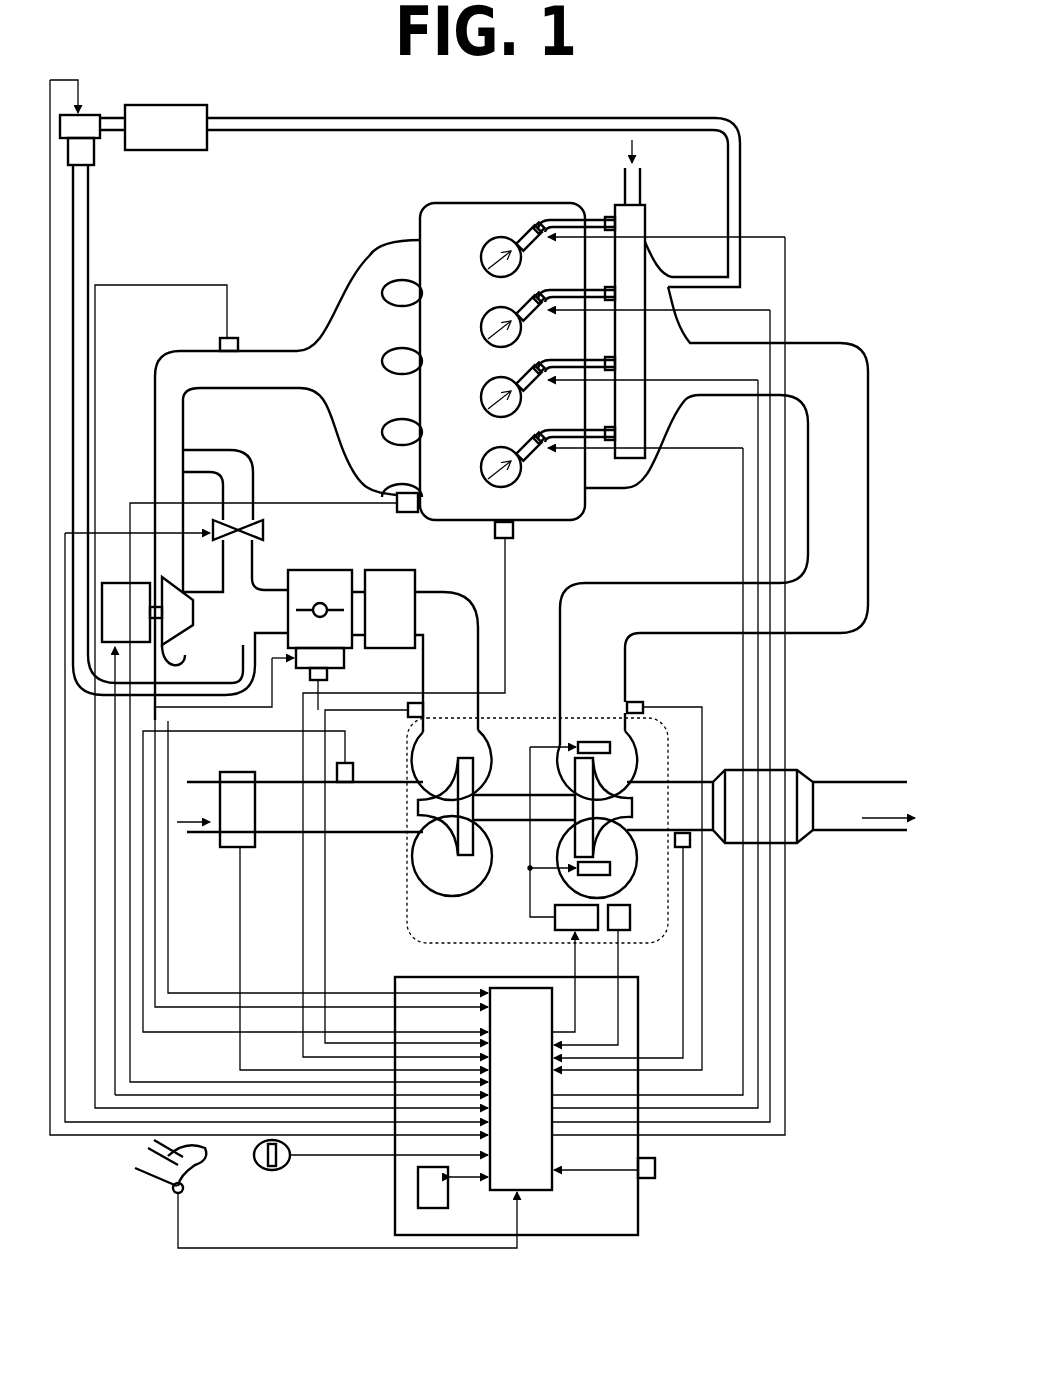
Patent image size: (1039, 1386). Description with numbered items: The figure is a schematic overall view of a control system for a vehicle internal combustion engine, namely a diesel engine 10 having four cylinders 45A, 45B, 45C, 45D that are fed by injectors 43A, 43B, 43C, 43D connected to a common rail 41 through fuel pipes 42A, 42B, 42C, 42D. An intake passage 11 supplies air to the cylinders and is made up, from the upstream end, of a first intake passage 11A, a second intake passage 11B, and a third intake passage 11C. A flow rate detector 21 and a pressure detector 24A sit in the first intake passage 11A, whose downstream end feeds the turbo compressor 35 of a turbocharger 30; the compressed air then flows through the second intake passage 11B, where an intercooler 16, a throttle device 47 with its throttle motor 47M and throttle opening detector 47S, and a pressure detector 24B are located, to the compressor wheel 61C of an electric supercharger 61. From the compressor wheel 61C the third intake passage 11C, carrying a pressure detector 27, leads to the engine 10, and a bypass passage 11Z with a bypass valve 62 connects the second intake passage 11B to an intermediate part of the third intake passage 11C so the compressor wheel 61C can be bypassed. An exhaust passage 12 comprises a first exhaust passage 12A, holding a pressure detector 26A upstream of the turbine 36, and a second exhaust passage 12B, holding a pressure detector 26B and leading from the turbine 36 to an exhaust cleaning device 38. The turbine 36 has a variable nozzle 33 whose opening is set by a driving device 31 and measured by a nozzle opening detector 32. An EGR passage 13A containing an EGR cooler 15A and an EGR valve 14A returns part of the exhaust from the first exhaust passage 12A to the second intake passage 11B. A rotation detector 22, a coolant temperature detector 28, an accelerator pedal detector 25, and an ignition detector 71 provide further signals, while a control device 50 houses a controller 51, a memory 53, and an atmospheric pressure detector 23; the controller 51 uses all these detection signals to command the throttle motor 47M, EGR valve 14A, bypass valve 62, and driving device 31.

The diesel engine 10 is at (405, 215).
The intake passage 11 is at (147, 340).
The first intake passage 11A is at (283, 780).
The second intake passage 11B is at (475, 600).
The third intake passage 11C is at (197, 345).
The bypass passage 11Z is at (256, 566).
The exhaust passage 12 is at (858, 333).
The first exhaust passage 12A is at (870, 440).
The second exhaust passage 12B is at (878, 778).
The EGR passage 13A is at (92, 245).
The EGR valve 14A is at (92, 112).
The EGR cooler 15A is at (160, 106).
The intercooler 16 is at (388, 563).
The flow rate detector 21 is at (225, 848).
The rotation detector 22 is at (520, 531).
The atmospheric pressure detector 23 is at (660, 1170).
The pressure detector 24A is at (347, 760).
The pressure detector 24B is at (415, 700).
The accelerator pedal detector 25 is at (170, 1195).
The pressure detector 26A is at (645, 700).
The pressure detector 26B is at (692, 845).
The pressure detector 27 is at (232, 336).
The coolant temperature detector 28 is at (395, 491).
The turbocharger 30 is at (505, 715).
The driving device 31 is at (585, 935).
The nozzle opening detector 32 is at (632, 912).
The variable nozzle 33 is at (618, 745).
The turbo compressor 35 is at (420, 885).
The turbine 36 is at (645, 757).
The exhaust cleaning device 38 is at (805, 842).
The common rail 41 is at (650, 225).
The fuel pipe 42A is at (550, 218).
The fuel pipe 42B is at (550, 292).
The fuel pipe 42C is at (553, 362).
The fuel pipe 42D is at (553, 430).
The injector 43A is at (486, 272).
The injector 43B is at (486, 342).
The injector 43C is at (486, 412).
The injector 43D is at (486, 482).
The cylinder 45A is at (490, 272).
The cylinder 45B is at (490, 342).
The cylinder 45C is at (490, 412).
The cylinder 45D is at (490, 482).
The throttle device 47 is at (333, 570).
The throttle motor 47M is at (345, 657).
The throttle opening detector 47S is at (330, 675).
The control device 50 is at (390, 1185).
The controller 51 is at (538, 1195).
The memory 53 is at (415, 1195).
The electric supercharger 61 is at (138, 580).
The compressor wheel 61C is at (170, 578).
The bypass valve 62 is at (265, 530).
The ignition detector 71 is at (272, 1175).